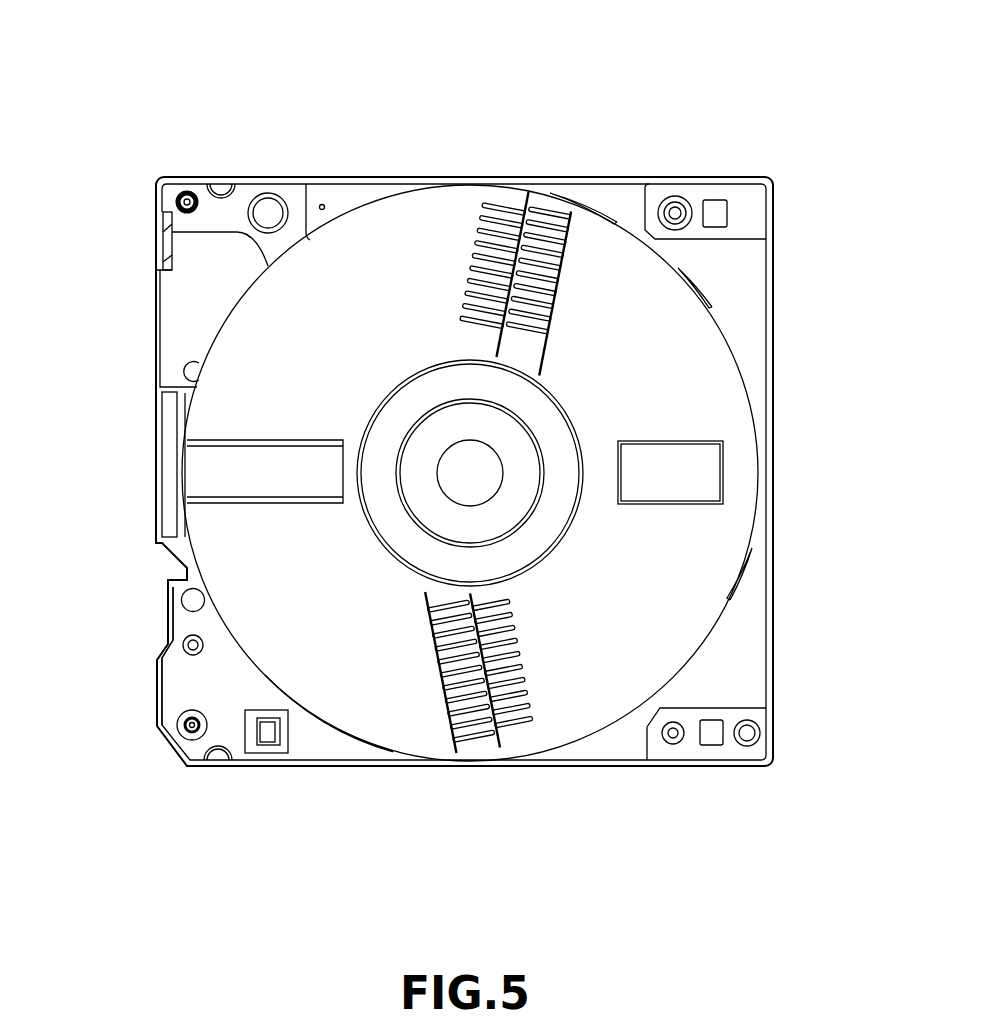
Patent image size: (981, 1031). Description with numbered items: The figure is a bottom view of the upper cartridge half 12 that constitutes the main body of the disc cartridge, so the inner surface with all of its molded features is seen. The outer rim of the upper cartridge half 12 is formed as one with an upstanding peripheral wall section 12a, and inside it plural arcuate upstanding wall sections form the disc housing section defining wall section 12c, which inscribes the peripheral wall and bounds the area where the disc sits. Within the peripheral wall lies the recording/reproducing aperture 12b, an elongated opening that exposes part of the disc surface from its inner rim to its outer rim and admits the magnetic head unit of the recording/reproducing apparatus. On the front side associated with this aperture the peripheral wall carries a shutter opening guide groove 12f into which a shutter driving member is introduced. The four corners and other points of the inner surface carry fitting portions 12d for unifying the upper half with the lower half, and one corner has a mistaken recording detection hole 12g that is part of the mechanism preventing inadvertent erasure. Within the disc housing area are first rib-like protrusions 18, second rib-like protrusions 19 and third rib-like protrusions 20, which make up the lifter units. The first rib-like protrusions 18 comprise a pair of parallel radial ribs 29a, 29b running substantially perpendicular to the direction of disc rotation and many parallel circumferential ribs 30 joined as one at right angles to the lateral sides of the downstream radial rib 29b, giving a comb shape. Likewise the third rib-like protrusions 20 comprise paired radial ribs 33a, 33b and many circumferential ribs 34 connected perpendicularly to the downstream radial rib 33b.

The upper cartridge half 12 is at (779, 90).
The upstanding peripheral wall section 12a is at (632, 769).
The recording/reproducing aperture 12b is at (236, 504).
The disc housing section defining wall section 12c is at (700, 614).
The fitting portions 12d is at (187, 194).
The shutter opening guide groove 12f is at (145, 617).
The mistaken recording detection hole 12g is at (720, 200).
The first rib-like protrusions 18 is at (500, 728).
The second rib-like protrusions 19 is at (704, 441).
The third rib-like protrusions 20 is at (516, 208).
The radial rib 29a is at (445, 706).
The radial rib 29b is at (495, 746).
The parallel circumferential ribs 30 is at (536, 721).
The radial rib 33a is at (567, 258).
The radial rib 33b is at (530, 198).
The circumferential ribs 34 is at (485, 206).